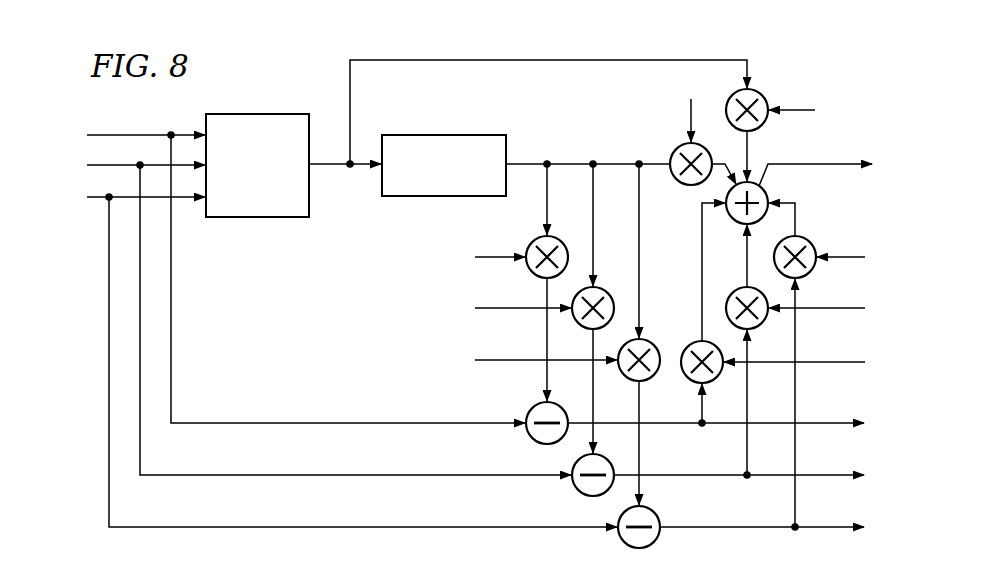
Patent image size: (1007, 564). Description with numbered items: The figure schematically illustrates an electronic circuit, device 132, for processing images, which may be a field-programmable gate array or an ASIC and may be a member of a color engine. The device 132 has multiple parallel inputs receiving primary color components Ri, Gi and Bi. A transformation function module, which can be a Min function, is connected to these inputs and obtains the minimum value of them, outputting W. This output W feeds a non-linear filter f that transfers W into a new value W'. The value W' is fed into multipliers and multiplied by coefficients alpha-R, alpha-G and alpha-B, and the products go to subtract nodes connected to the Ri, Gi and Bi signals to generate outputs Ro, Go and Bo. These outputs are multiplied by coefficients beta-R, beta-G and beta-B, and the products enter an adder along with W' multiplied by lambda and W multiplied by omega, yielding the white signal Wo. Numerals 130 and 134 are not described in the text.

The device 132 is at (783, 63).
The white signal function block 130 is at (257, 165).
The non-linear filter 134 is at (444, 165).